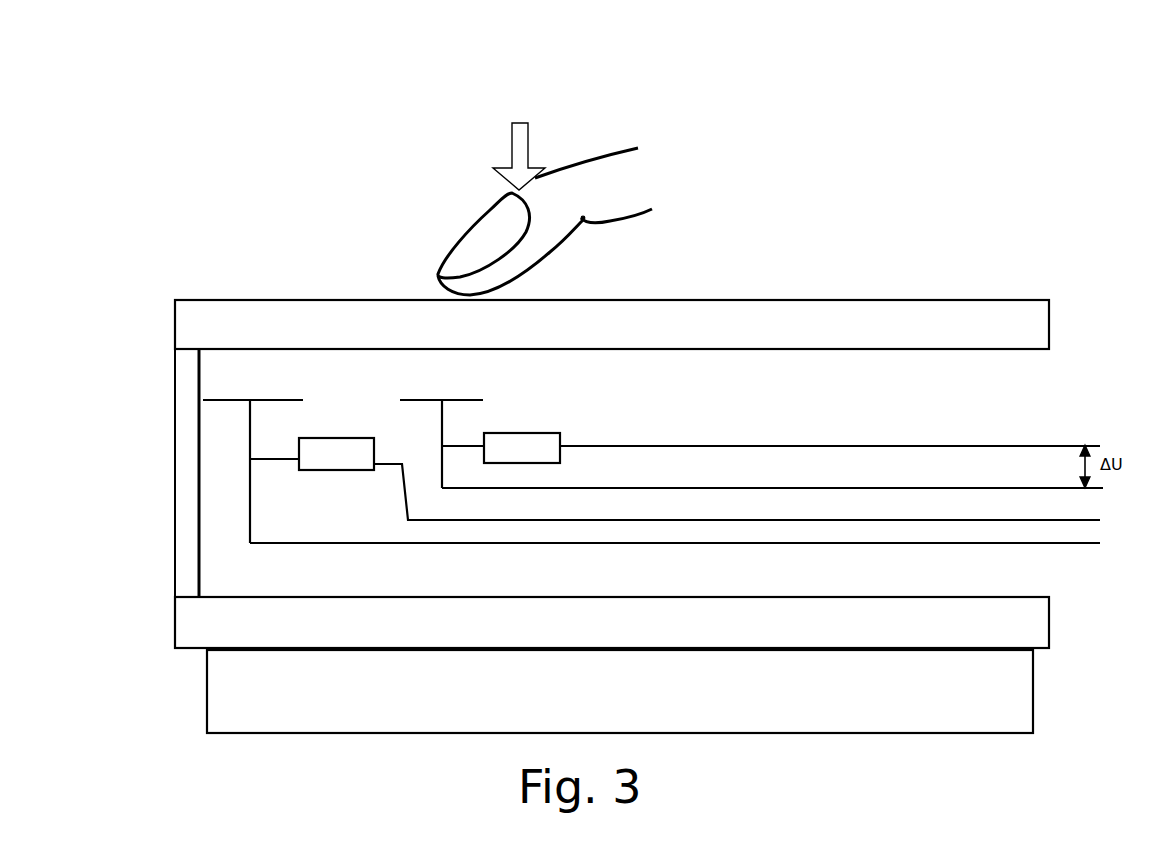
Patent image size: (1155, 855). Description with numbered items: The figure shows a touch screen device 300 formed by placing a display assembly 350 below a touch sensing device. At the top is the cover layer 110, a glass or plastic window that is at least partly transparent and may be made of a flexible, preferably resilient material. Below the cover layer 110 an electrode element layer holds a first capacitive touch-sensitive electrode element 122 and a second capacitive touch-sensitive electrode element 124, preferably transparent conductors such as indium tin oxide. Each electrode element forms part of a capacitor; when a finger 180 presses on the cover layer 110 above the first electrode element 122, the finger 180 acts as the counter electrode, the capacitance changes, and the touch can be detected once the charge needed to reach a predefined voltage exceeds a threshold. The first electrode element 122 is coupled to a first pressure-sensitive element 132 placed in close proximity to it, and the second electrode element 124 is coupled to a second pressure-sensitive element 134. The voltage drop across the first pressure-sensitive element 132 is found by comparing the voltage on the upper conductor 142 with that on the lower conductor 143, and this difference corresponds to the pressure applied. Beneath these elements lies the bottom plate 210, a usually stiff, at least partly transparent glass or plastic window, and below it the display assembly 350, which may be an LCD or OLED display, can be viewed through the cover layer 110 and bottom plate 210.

The cover layer 110 is at (660, 300).
The first capacitive electrode element 122 is at (423, 384).
The second capacitive electrode element 124 is at (230, 410).
The first pressure-sensitive element 132 is at (511, 427).
The second pressure-sensitive element 134 is at (330, 475).
The upper conductor 142 is at (697, 442).
The lower conductor 143 is at (683, 487).
The finger 180 is at (587, 177).
The bottom plate 210 is at (1050, 618).
The touch screen device 300 is at (342, 180).
The display assembly 350 is at (1034, 695).